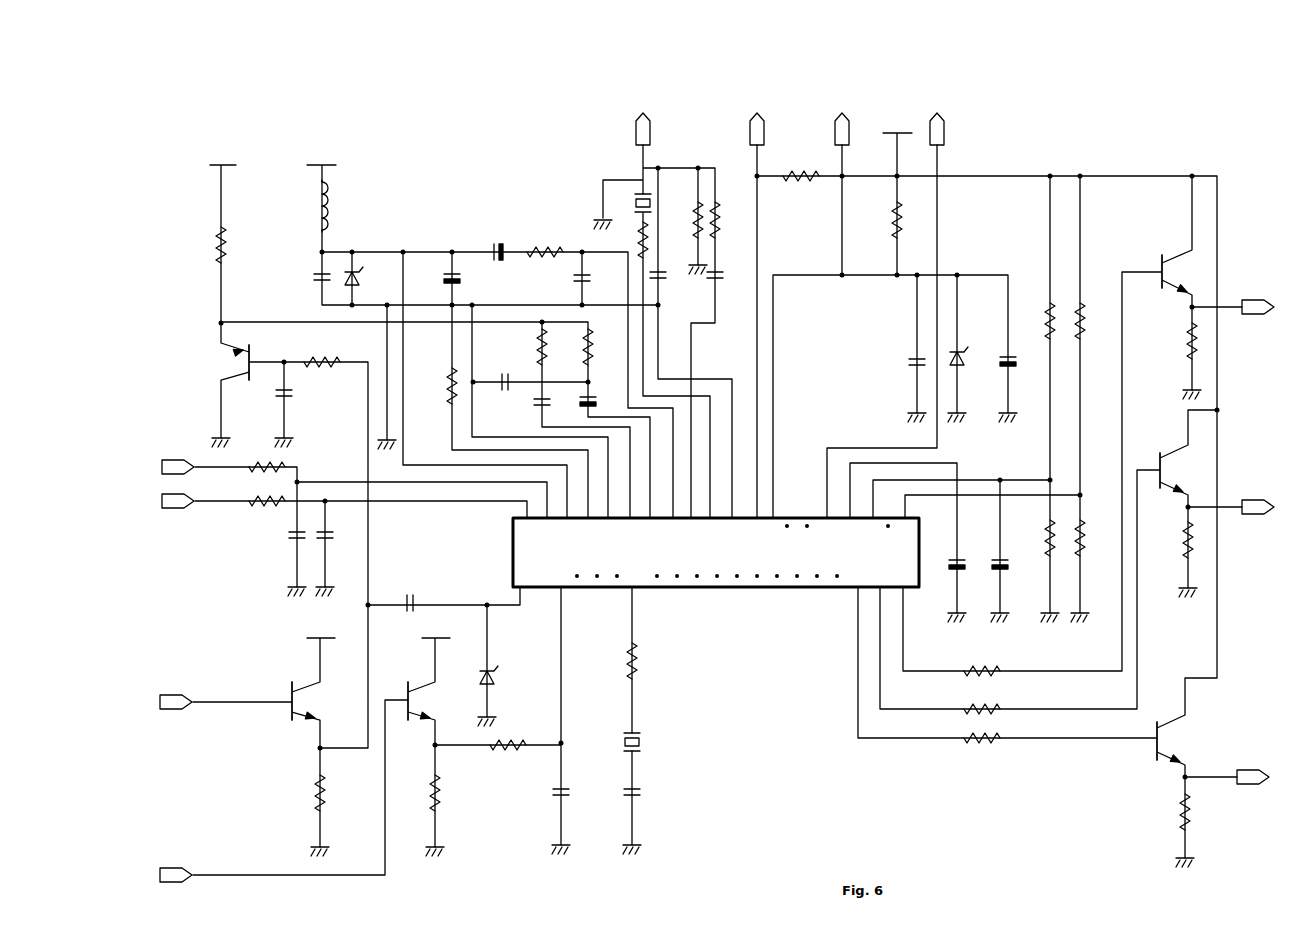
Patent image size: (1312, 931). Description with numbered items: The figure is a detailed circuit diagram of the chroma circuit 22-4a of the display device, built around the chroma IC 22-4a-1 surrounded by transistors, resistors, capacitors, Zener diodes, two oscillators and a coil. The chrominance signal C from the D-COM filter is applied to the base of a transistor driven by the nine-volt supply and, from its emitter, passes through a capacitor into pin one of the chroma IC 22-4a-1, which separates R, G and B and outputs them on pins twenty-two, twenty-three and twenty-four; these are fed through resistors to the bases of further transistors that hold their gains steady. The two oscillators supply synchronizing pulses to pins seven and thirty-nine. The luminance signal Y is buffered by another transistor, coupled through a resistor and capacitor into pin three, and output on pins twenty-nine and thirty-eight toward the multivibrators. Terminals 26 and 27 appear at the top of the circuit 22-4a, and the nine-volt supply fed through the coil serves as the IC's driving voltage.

The chroma IC 22-4a is at (1082, 108).
The chroma IC 22-4a-1 is at (690, 588).
The connector terminal 26 is at (758, 129).
The connector terminal 27 is at (843, 129).